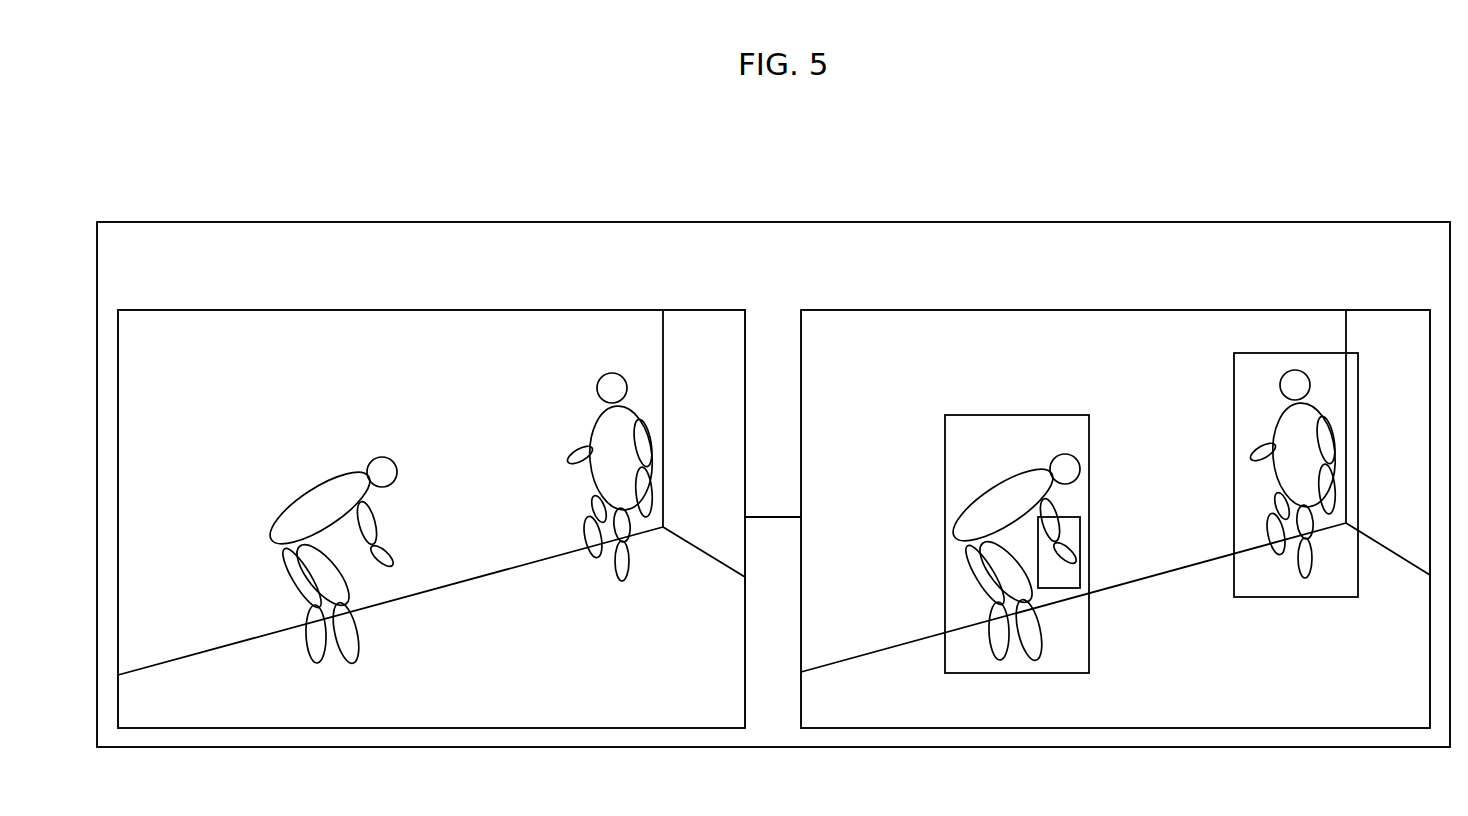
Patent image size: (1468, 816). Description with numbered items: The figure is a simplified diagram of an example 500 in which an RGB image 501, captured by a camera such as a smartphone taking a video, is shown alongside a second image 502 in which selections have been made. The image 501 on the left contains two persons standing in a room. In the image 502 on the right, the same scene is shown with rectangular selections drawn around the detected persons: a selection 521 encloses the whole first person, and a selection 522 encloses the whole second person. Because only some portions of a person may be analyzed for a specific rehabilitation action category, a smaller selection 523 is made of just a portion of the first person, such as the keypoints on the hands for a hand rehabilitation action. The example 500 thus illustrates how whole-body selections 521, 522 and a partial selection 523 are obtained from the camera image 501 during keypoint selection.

The example diagram 500 is at (112, 188).
The image 501 is at (178, 310).
The image 502 is at (848, 310).
The selection 521 is at (1089, 427).
The selection 522 is at (1235, 372).
The selection 523 is at (1080, 527).